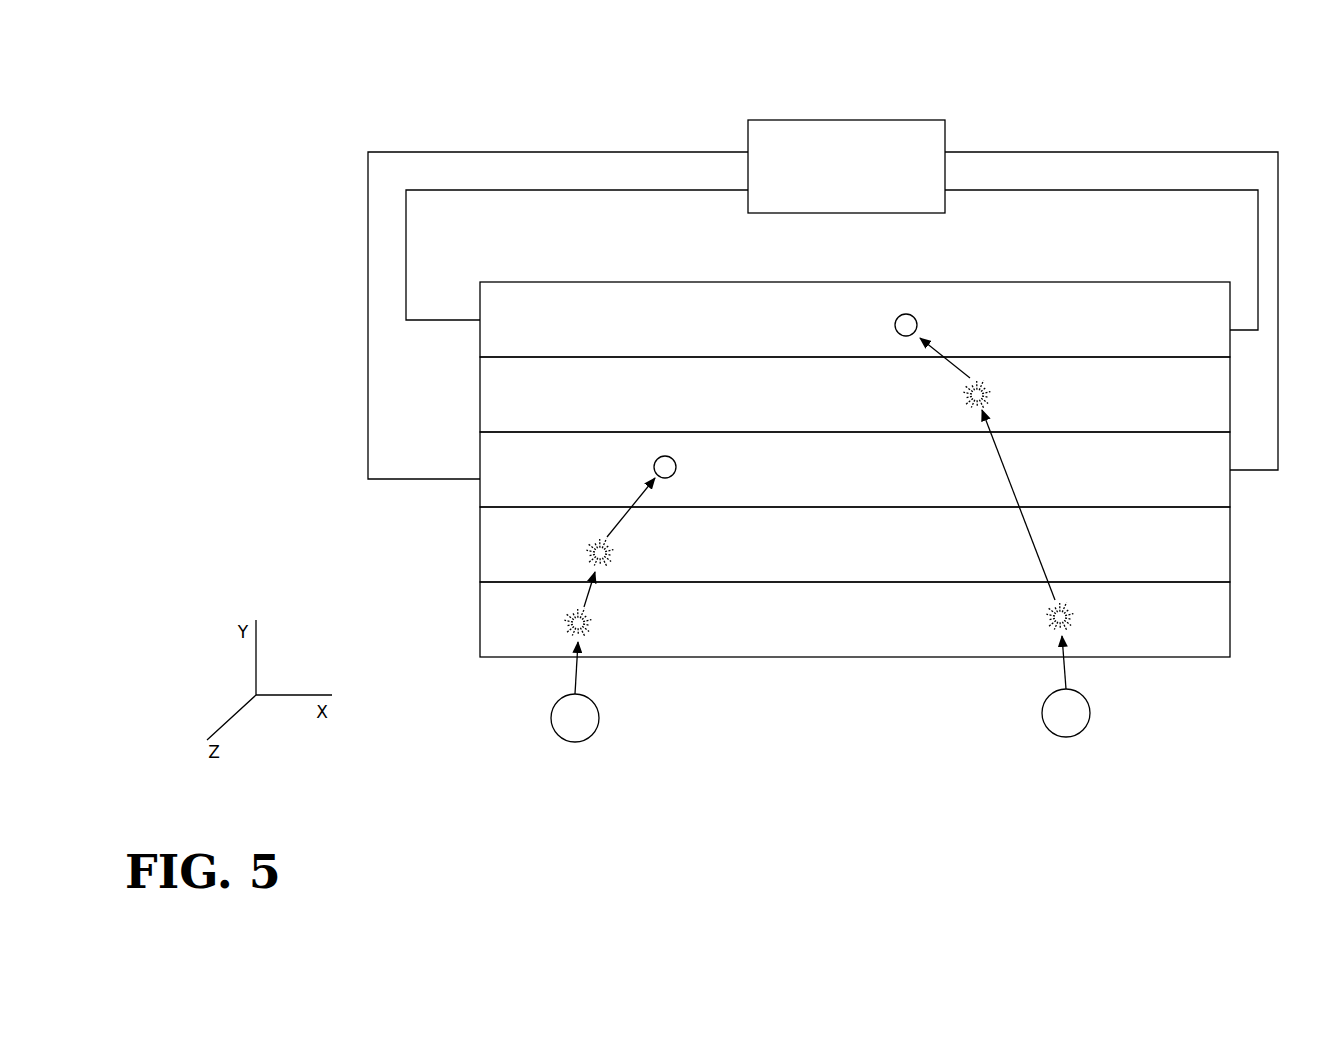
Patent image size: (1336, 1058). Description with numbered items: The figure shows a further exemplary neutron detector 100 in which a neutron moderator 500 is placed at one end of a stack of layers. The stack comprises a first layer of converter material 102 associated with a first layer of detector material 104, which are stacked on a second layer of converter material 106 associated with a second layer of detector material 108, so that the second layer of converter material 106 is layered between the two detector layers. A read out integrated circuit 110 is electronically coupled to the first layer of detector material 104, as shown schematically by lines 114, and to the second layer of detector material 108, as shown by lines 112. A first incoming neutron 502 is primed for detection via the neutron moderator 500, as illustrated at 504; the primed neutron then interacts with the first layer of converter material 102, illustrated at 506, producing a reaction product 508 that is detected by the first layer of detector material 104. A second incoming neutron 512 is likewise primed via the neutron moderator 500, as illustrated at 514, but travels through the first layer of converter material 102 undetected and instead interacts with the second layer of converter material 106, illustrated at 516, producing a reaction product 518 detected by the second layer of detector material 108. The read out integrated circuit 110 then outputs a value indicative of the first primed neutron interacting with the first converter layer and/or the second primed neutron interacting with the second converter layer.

The neutron detector 100 is at (232, 118).
The read out integrated circuit 110 is at (825, 118).
The lines 112 is at (521, 195).
The lines 114 is at (463, 140).
The second layer of detector material 108 is at (480, 306).
The second layer of converter material 106 is at (480, 398).
The first layer of detector material 104 is at (480, 467).
The first layer of converter material 102 is at (480, 557).
The neutron moderator 500 is at (480, 638).
The first incoming neutron 502 is at (612, 722).
The priming of first neutron 504 is at (560, 630).
The interaction with first converter layer 506 is at (583, 556).
The reaction product 508 is at (654, 453).
The second incoming neutron 512 is at (1032, 713).
The priming of second neutron 514 is at (1085, 622).
The interaction with subsequent converter layer 516 is at (997, 400).
The reaction product 518 is at (913, 310).